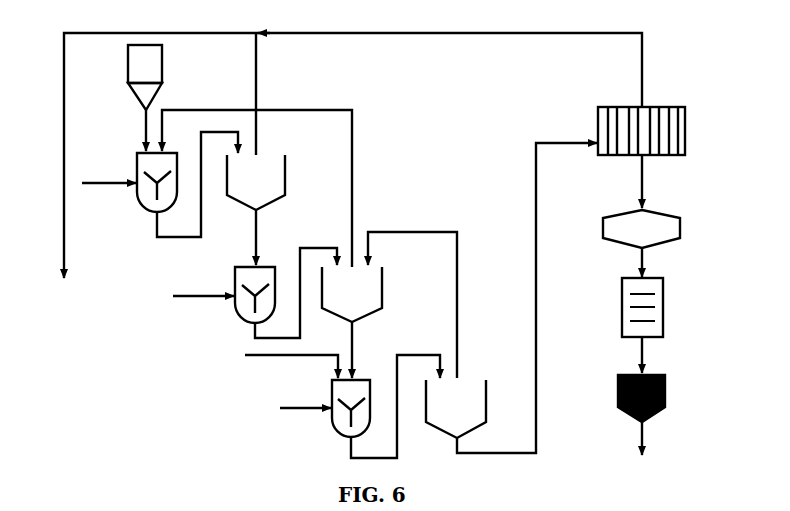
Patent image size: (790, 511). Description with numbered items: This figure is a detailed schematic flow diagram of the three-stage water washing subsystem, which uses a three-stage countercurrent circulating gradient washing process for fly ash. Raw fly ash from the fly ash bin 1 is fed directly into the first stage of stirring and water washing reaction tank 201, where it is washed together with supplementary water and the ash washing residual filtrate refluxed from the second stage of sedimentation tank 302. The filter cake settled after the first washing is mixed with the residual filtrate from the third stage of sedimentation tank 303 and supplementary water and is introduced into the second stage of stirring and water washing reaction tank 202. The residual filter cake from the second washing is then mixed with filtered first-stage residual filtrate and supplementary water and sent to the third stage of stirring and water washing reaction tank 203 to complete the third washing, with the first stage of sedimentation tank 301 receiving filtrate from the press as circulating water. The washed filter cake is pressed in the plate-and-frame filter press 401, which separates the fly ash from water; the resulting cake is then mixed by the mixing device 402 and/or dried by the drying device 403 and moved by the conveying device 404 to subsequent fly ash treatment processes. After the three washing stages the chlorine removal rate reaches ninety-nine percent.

The fly ash bin 1 is at (133, 77).
The first stage of stirring and water washing reaction tank 201 is at (134, 182).
The second stage of stirring and water washing reaction tank 202 is at (227, 295).
The third stage of stirring and water washing reaction tank 203 is at (322, 408).
The first stage of sedimentation tank 301 is at (280, 181).
The second stage of sedimentation tank 302 is at (375, 294).
The third stage of sedimentation tank 303 is at (456, 408).
The plate-and-frame filter press 401 is at (622, 129).
The mixing device 402 is at (619, 229).
The drying device 403 is at (611, 307).
The conveying device 404 is at (612, 398).